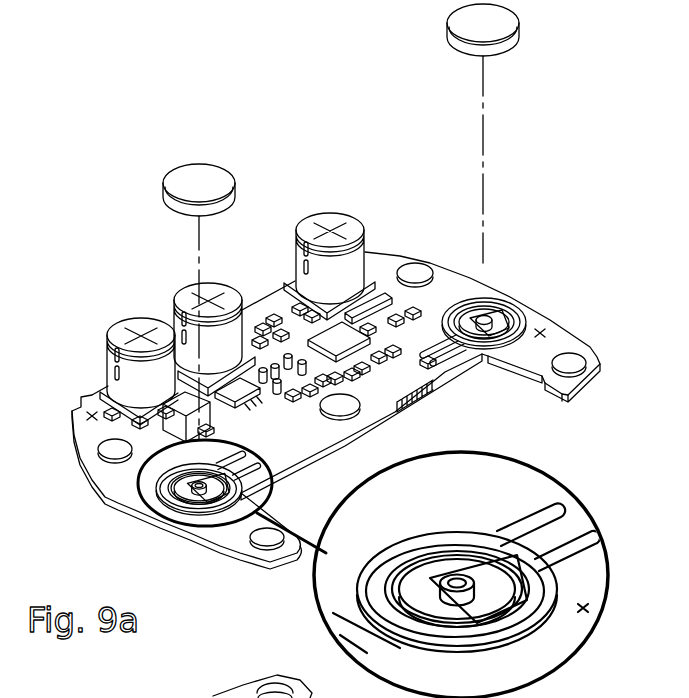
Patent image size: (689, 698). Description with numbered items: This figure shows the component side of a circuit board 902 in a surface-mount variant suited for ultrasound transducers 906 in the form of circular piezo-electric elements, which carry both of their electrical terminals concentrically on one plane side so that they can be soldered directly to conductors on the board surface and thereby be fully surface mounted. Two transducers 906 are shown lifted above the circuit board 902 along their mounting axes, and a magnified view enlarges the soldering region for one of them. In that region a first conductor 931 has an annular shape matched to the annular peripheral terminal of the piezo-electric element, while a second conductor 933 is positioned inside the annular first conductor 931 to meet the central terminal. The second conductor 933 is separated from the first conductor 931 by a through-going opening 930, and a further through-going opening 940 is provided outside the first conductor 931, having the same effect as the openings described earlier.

The circuit board 902 is at (127, 471).
The ultrasound transducer 906 is at (463, 30).
The through-going opening 930 is at (417, 592).
The first conductor 931 is at (398, 540).
The second conductor 933 is at (457, 580).
The through-going opening 940 is at (547, 600).